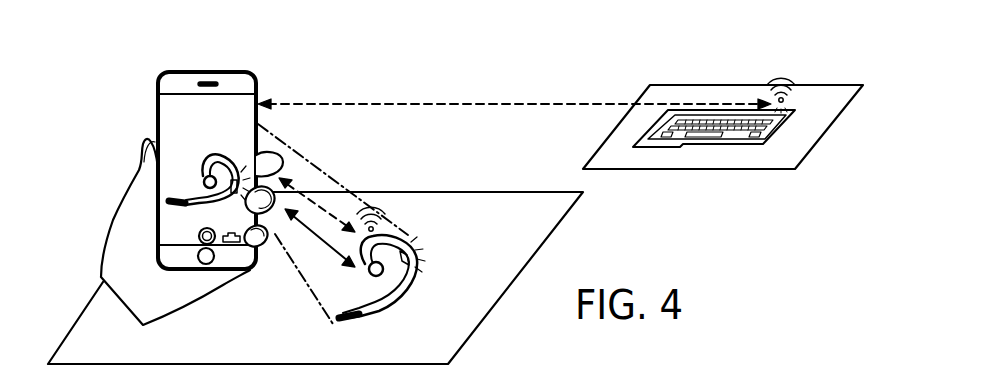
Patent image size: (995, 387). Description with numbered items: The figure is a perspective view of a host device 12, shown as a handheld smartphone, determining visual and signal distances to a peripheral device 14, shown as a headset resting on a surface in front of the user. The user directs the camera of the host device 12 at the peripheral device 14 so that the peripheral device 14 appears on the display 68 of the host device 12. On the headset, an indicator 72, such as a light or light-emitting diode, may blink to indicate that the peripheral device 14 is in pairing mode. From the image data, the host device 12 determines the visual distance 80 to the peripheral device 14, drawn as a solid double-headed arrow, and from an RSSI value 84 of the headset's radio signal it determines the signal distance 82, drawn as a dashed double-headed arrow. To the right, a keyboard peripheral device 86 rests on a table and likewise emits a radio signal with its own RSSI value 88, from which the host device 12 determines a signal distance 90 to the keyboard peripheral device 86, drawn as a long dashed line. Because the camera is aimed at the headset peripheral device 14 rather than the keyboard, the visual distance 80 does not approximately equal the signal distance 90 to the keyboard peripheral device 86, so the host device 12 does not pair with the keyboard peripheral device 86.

The host device 12 is at (201, 70).
The display 68 is at (170, 120).
The peripheral device 14 is at (378, 306).
The indicator 72 is at (410, 268).
The visual distance 80 is at (312, 238).
The signal distance 82 is at (314, 200).
The RSSI value 84 is at (372, 202).
The keyboard peripheral device 86 is at (722, 144).
The RSSI value 88 is at (776, 76).
The signal distance 90 is at (522, 100).